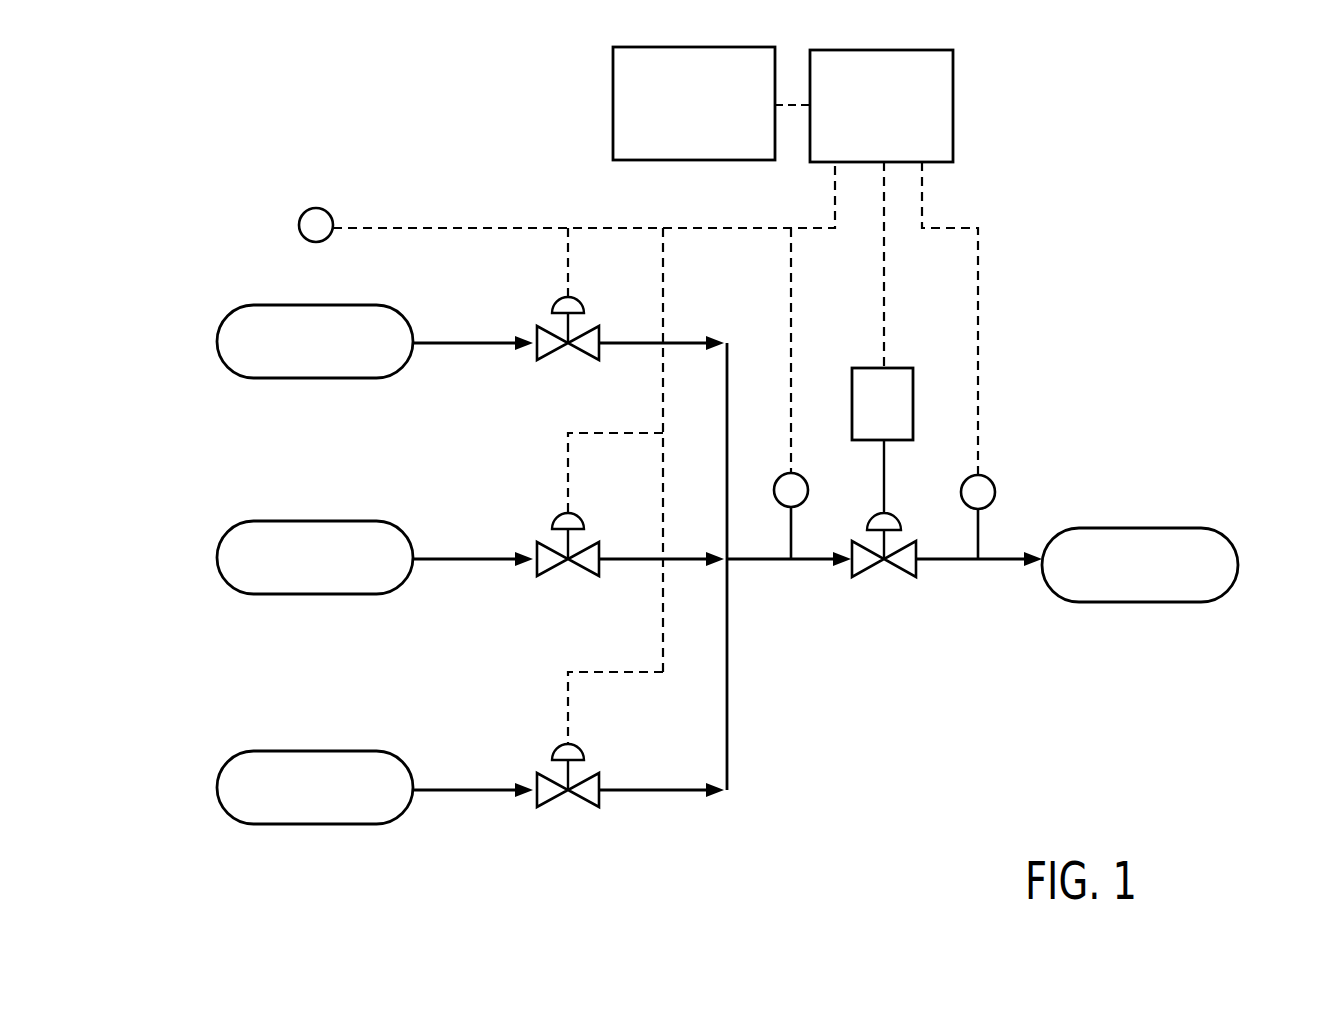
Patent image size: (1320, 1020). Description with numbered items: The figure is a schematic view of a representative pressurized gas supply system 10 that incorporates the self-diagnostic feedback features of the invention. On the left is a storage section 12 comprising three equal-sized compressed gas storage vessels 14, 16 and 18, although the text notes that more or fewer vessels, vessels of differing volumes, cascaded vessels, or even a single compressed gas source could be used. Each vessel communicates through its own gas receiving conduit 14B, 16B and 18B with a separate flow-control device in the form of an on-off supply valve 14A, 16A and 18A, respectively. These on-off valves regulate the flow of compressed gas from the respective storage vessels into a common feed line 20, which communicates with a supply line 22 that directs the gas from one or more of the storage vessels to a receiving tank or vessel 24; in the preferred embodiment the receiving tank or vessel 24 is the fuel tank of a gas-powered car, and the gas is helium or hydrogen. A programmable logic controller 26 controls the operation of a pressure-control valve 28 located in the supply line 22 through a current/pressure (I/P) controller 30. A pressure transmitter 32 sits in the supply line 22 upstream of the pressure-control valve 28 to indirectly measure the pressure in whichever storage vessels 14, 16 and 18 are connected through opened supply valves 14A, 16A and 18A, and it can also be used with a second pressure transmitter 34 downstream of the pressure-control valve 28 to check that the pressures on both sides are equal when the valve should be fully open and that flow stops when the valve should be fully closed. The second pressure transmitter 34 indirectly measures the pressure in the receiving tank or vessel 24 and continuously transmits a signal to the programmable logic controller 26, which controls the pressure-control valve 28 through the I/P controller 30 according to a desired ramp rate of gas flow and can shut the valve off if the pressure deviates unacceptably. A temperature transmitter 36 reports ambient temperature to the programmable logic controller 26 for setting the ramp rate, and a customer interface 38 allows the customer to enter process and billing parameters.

The pressurized gas supply system 10 is at (1152, 195).
The storage section 12 is at (227, 278).
The compressed gas storage vessel 14 is at (268, 378).
The on-off supply valve 14A is at (568, 332).
The gas receiving conduit 14B is at (470, 340).
The compressed gas storage vessel 16 is at (265, 594).
The on-off supply valve 16A is at (568, 548).
The gas receiving conduit 16B is at (468, 555).
The compressed gas storage vessel 18 is at (258, 824).
The on-off supply valve 18A is at (570, 778).
The gas receiving conduit 18B is at (468, 788).
The common feed line 20 is at (729, 688).
The supply line 22 is at (950, 562).
The receiving tank or vessel 24 is at (1200, 528).
The programmable logic controller 26 is at (953, 105).
The pressure-control valve 28 is at (884, 538).
The current/pressure (I/P) controller 30 is at (899, 368).
The pressure transmitter 32 is at (777, 482).
The second pressure transmitter 34 is at (993, 487).
The temperature transmitter 36 is at (316, 208).
The customer interface 38 is at (613, 86).